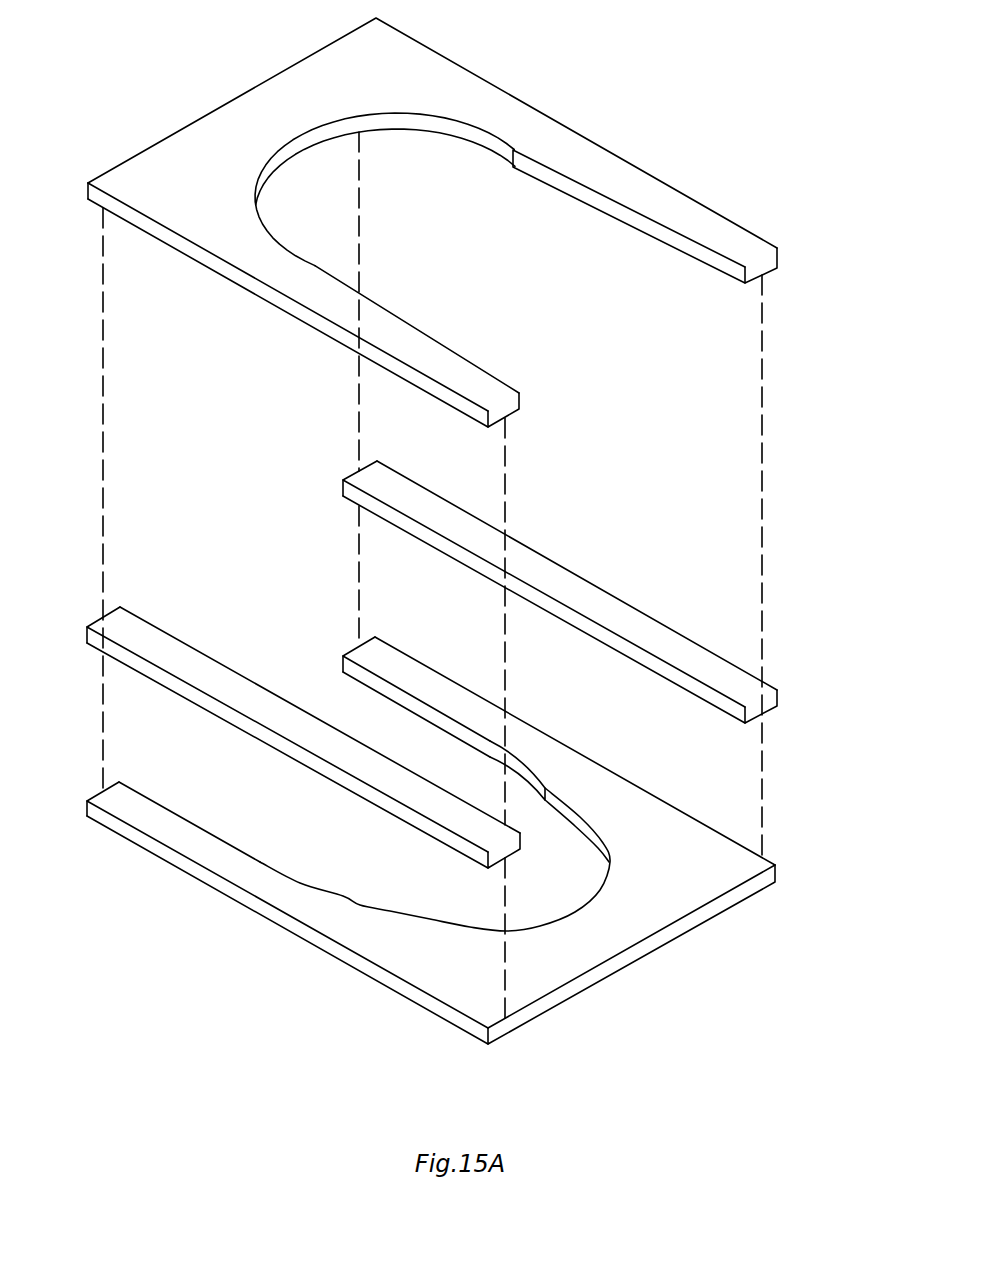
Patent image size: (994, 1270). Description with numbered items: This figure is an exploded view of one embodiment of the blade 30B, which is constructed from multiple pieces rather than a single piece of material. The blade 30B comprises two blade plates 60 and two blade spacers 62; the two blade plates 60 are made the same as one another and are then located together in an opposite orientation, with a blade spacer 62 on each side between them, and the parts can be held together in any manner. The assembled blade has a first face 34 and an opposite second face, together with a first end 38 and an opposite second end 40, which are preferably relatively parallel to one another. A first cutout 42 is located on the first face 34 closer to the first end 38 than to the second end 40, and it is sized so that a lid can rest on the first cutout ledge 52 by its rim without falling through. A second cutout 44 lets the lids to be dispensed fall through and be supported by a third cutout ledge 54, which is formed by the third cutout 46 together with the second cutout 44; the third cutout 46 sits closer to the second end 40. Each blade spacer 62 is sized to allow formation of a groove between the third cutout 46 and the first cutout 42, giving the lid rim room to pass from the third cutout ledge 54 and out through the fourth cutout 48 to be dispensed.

The blade 30B is at (668, 47).
The first face 34 is at (310, 78).
The first end 38 is at (218, 108).
The second end 40 is at (775, 258).
The first cutout 42 is at (362, 125).
The second cutout 44 is at (656, 227).
The third cutout 46 is at (583, 817).
The fourth cutout 48 is at (420, 708).
The first cutout ledge 52 is at (263, 131).
The third cutout ledge 54 is at (578, 936).
The blade plate 60 is at (452, 82).
The blade spacer 62 is at (553, 577).